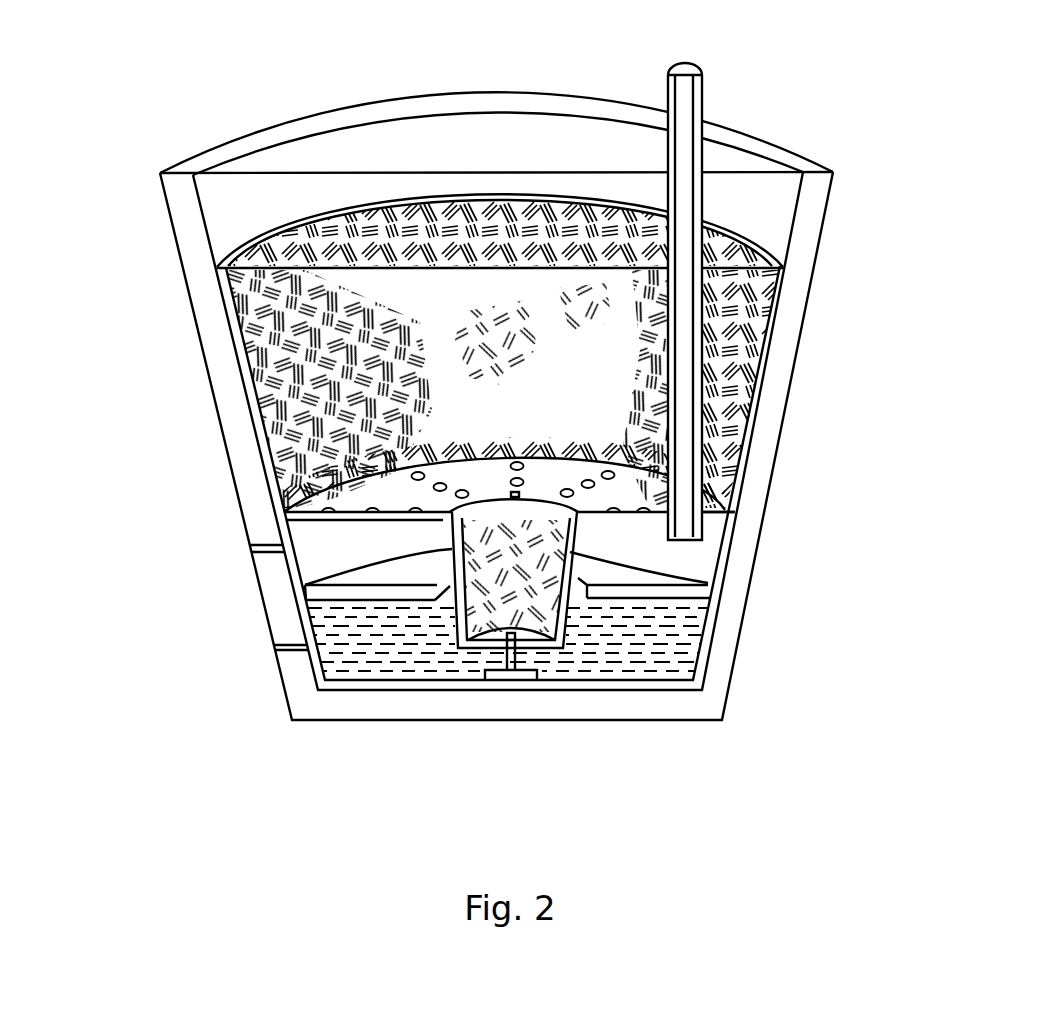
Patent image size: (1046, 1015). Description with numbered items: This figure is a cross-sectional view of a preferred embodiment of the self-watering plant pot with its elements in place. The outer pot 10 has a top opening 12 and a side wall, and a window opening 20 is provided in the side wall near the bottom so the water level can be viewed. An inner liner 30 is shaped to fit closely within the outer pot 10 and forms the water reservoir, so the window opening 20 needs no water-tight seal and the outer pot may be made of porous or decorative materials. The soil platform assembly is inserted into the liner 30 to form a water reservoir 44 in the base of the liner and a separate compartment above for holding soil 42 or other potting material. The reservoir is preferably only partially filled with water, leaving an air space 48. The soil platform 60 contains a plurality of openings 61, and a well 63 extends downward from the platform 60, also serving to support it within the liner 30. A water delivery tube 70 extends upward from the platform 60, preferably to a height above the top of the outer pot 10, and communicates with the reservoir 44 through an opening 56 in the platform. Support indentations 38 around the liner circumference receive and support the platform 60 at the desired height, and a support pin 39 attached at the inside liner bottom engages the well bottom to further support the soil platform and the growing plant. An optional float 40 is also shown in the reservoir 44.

The outer pot 10 is at (130, 268).
The top opening 12 is at (332, 157).
The window opening 20 is at (290, 617).
The inner liner 30 is at (773, 300).
The support indentations 38 is at (290, 527).
The support pin 39 is at (514, 675).
The float 40 is at (693, 592).
The soil 42 is at (300, 330).
The water reservoir 44 is at (333, 667).
The air space 48 is at (328, 553).
The opening 56 is at (723, 506).
The soil platform 60 is at (310, 502).
The openings 61 is at (612, 479).
The well 63 is at (563, 637).
The water delivery tube 70 is at (680, 98).